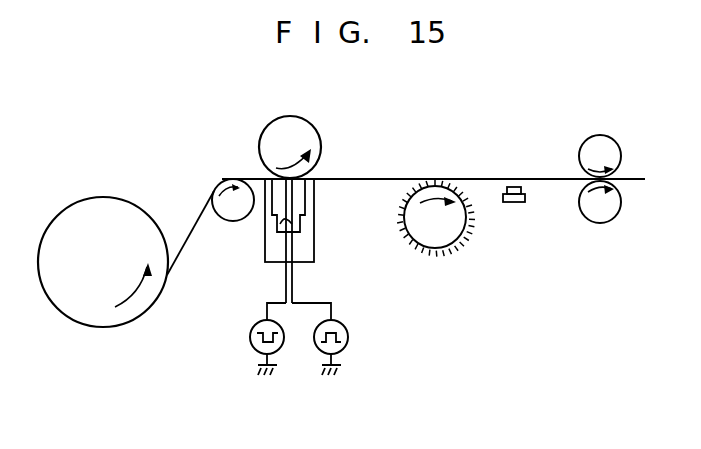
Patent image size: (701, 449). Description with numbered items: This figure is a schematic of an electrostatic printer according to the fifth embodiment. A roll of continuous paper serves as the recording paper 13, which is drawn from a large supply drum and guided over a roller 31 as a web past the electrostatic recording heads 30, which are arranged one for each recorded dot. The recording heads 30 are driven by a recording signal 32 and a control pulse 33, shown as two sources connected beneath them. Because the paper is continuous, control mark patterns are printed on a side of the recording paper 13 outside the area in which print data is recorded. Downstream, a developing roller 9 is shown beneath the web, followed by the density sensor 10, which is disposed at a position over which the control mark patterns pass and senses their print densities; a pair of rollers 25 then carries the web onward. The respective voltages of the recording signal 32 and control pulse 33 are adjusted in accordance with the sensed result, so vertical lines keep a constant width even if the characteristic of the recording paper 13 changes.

The recording paper 13 is at (82, 326).
The roller 31 is at (262, 142).
The electrostatic recording head 30 is at (315, 253).
The recording signal 32 is at (250, 337).
The control pulse 33 is at (349, 335).
The brush developing roller 9 is at (437, 254).
The density sensor 10 is at (513, 202).
The pinch rollers 25 is at (600, 223).